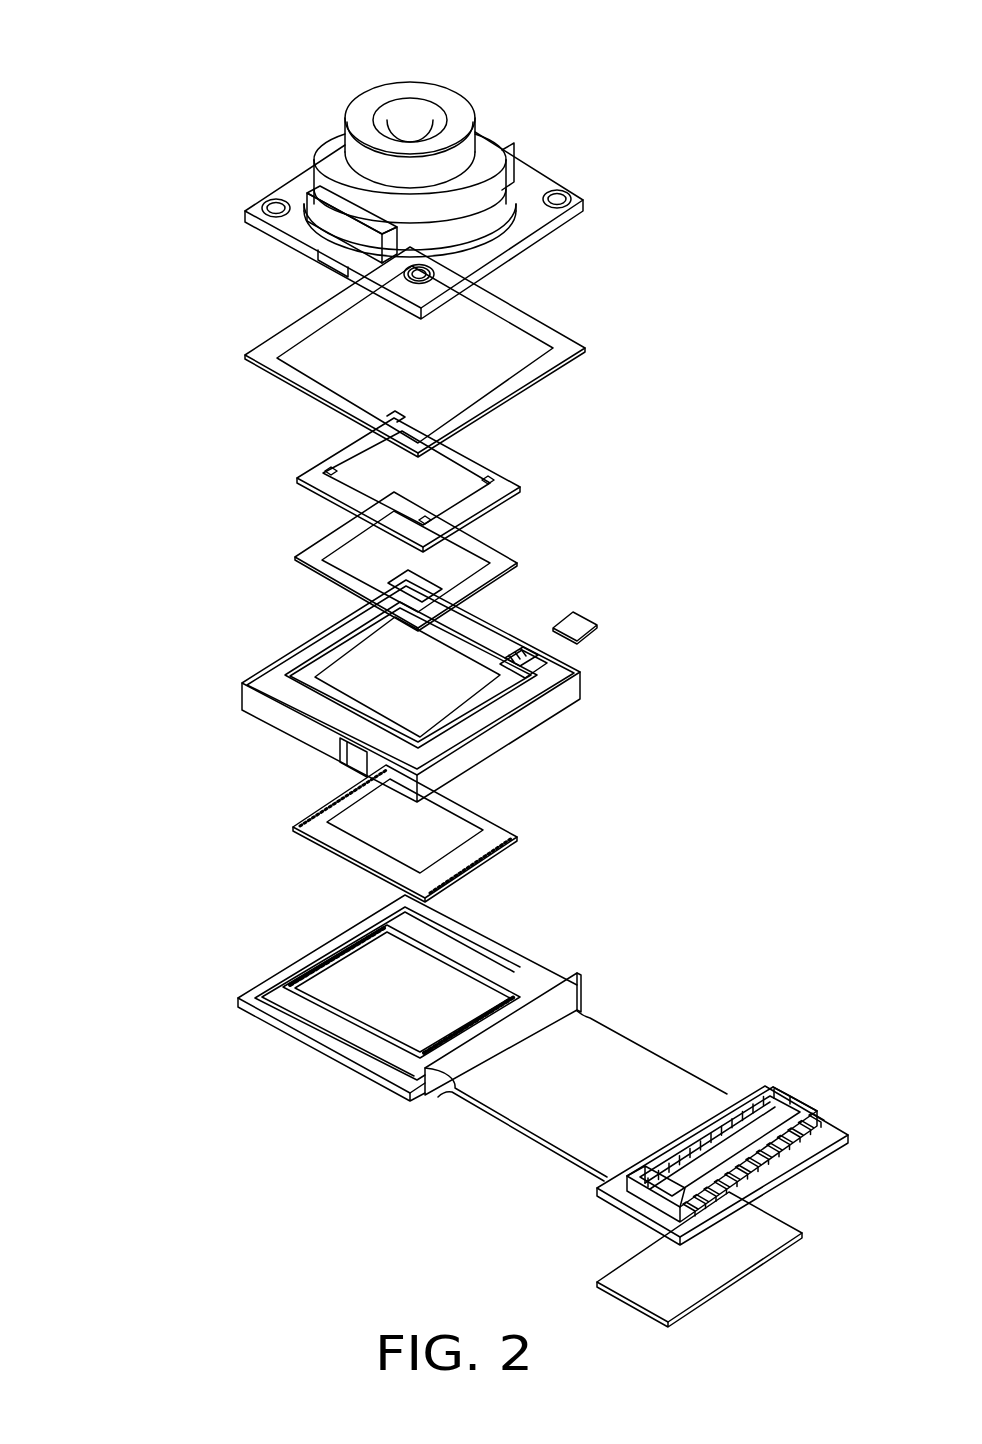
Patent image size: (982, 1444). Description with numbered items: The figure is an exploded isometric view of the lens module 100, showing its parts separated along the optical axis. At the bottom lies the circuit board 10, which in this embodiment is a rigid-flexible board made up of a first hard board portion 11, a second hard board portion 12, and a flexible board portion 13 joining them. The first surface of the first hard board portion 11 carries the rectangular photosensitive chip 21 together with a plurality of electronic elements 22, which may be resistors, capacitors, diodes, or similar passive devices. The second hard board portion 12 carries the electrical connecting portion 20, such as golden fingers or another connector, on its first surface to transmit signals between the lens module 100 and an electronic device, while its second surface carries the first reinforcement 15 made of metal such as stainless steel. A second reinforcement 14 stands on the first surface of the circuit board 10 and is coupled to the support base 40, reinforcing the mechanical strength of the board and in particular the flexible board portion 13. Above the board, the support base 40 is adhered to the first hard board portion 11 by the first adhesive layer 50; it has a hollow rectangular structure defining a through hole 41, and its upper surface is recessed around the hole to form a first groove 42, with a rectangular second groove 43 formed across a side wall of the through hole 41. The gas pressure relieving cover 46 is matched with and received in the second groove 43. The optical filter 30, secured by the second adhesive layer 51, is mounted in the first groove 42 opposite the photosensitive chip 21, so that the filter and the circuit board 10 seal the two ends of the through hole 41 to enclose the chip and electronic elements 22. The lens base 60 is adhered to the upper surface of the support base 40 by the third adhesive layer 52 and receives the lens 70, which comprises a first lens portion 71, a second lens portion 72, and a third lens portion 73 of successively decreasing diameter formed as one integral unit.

The lens module 100 is at (155, 62).
The lens 70 is at (652, 68).
The third lens portion 73 is at (470, 157).
The second lens portion 72 is at (490, 175).
The first lens portion 71 is at (493, 217).
The lens base 60 is at (523, 223).
The third adhesive layer 52 is at (567, 347).
The optical filter 30 is at (503, 482).
The second adhesive layer 51 is at (503, 567).
The gas pressure relieving cover 46 is at (590, 622).
The support base 40 is at (572, 692).
The first groove 42 is at (357, 649).
The through hole 41 is at (349, 682).
The second groove 43 is at (541, 657).
The photosensitive chip 21 is at (497, 833).
The circuit board 10 is at (483, 1223).
The first hard board portion 11 is at (363, 1072).
The first adhesive layer 50 is at (517, 963).
The electronic elements 22 is at (327, 958).
The second reinforcement 14 is at (560, 1007).
The flexible board portion 13 is at (530, 1110).
The second hard board portion 12 is at (623, 1197).
The electrical connecting portion 20 is at (770, 1117).
The first reinforcement 15 is at (777, 1233).